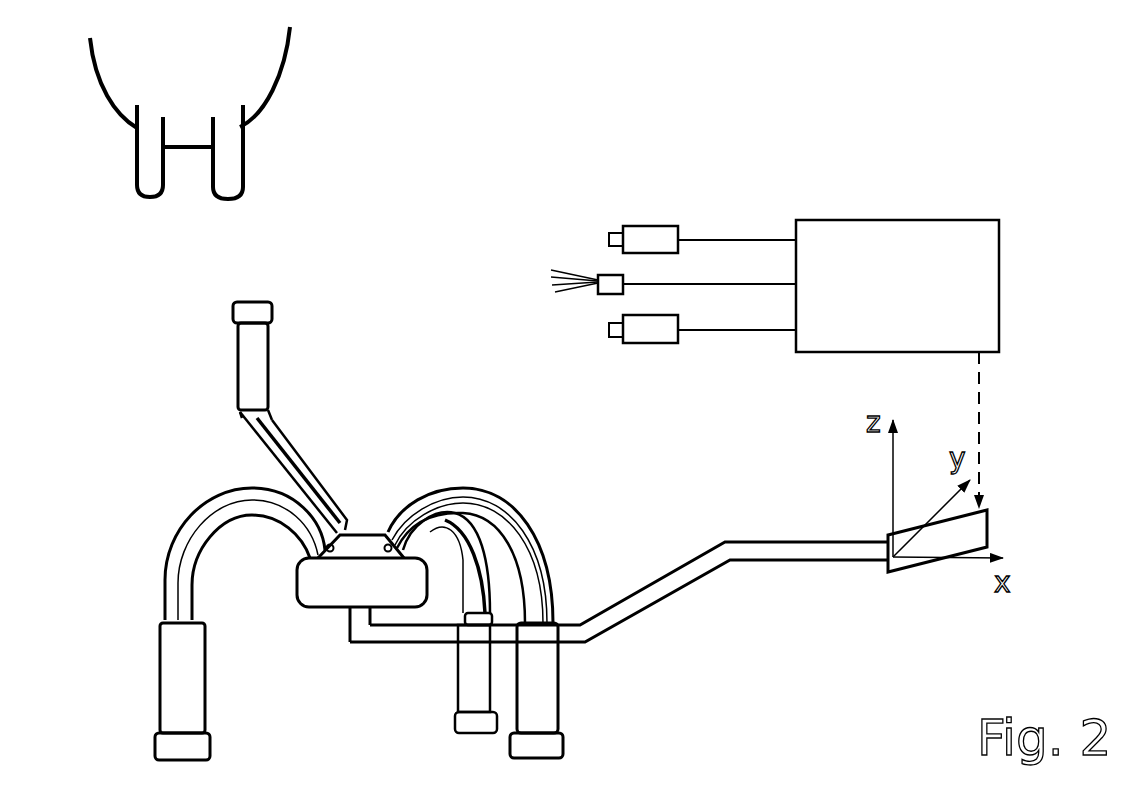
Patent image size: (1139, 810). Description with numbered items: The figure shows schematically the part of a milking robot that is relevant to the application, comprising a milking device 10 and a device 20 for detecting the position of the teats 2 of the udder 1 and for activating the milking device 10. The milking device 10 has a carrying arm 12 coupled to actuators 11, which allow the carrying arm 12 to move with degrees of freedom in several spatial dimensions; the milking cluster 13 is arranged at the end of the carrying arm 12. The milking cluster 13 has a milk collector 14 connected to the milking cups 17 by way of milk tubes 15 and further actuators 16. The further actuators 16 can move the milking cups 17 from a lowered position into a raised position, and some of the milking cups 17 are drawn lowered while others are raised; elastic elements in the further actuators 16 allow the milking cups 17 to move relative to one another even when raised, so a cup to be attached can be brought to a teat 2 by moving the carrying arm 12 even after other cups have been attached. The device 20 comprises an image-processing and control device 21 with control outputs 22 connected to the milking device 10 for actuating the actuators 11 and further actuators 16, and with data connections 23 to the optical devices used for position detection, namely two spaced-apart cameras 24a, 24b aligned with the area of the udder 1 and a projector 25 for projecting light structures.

The udder 1 is at (247, 78).
The teats 2 is at (150, 187).
The milking device 10 is at (632, 701).
The actuators 11 is at (972, 535).
The carrying arm 12 is at (625, 608).
The milking cluster 13 is at (312, 622).
The milk collector 14 is at (355, 545).
The milk tubes 15 is at (293, 467).
The further actuators 16 is at (258, 455).
The milking cups 17 is at (245, 390).
The device for detecting the position of the teats 20 is at (830, 198).
The image-processing and control device 21 is at (1000, 247).
The control outputs 22 is at (982, 413).
The data connections 23 is at (730, 330).
The camera 24a is at (658, 343).
The camera 24b is at (652, 225).
The projector 25 is at (610, 293).